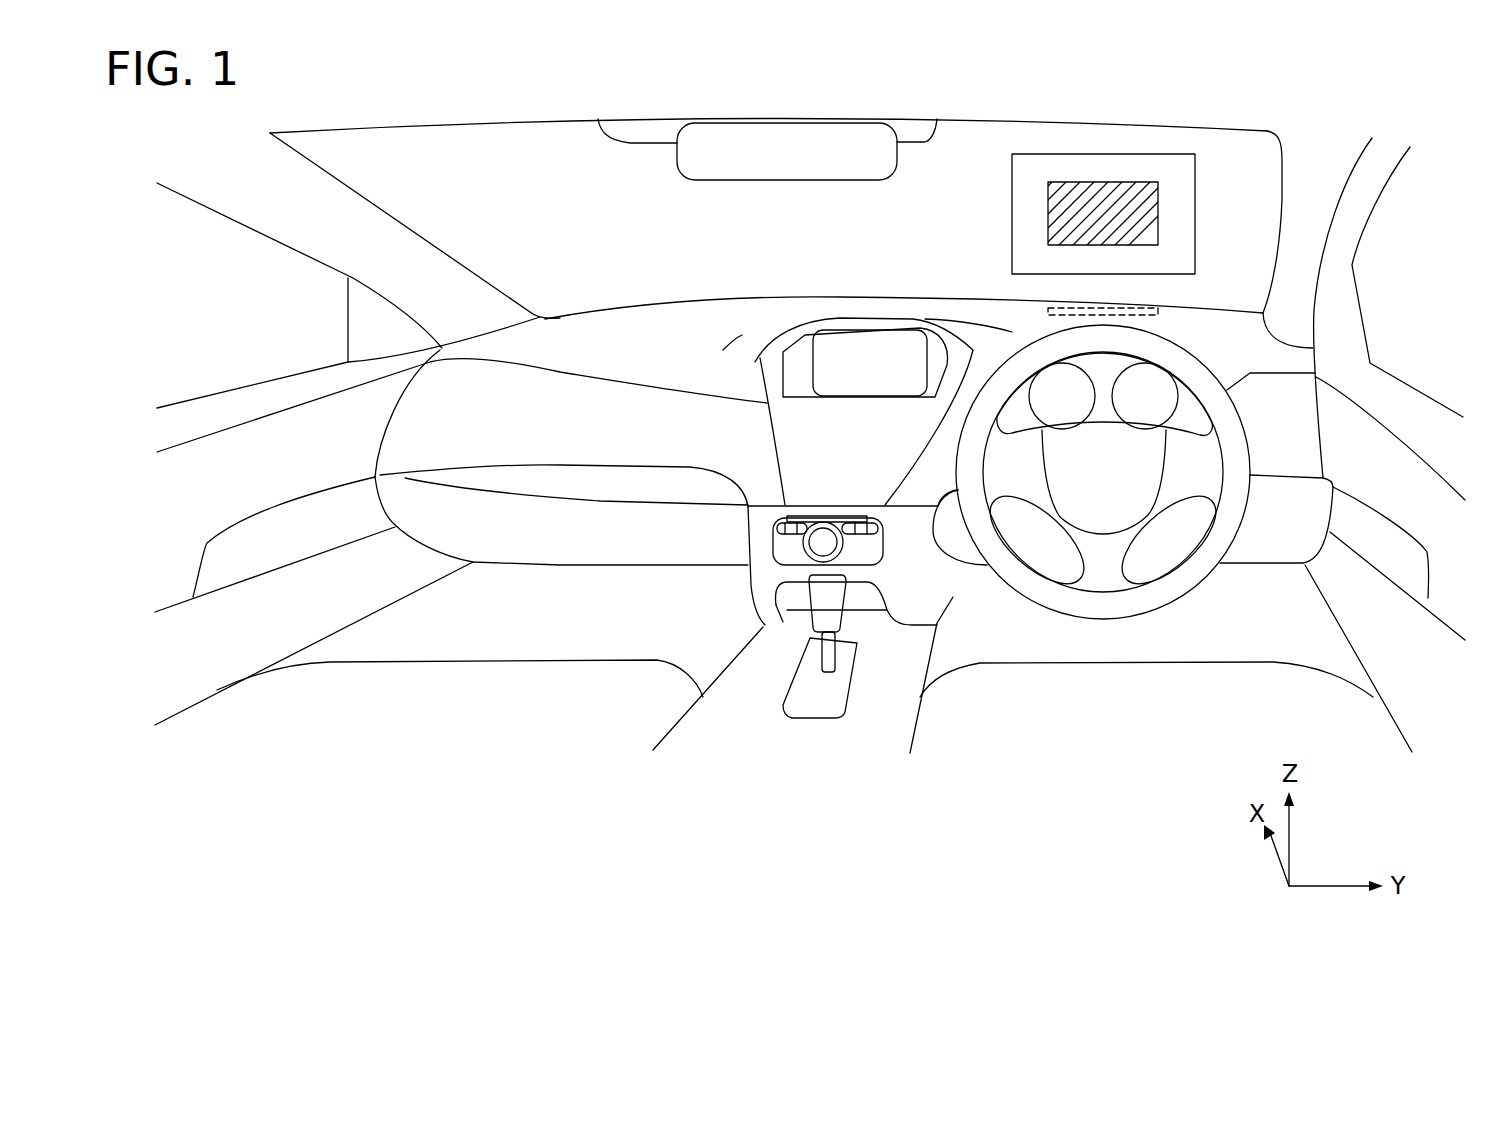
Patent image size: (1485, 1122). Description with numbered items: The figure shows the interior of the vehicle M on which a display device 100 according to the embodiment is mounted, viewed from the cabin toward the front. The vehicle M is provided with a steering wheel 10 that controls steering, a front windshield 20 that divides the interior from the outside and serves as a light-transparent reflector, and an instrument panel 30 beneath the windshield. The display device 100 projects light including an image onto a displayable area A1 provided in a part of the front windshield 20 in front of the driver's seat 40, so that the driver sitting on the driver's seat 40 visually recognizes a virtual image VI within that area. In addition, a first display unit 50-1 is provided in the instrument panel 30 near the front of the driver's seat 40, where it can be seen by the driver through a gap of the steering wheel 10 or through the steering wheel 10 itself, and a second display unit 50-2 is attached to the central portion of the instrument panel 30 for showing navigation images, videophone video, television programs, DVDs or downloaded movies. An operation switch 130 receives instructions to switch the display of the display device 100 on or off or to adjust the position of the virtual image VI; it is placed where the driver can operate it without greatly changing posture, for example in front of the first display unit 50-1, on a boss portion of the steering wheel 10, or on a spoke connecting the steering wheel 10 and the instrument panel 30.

The steering wheel 10 is at (1192, 592).
The front windshield 20 is at (853, 249).
The instrument panel 30 is at (683, 340).
The driver's seat 40 is at (1133, 727).
The first display unit 50-1 is at (1058, 390).
The second display unit 50-2 is at (840, 377).
The display device 100 is at (1158, 311).
The operation switch 130 is at (1185, 423).
The displayable area A1 is at (1012, 174).
The virtual image VI is at (1048, 215).
The vehicle M is at (636, 626).